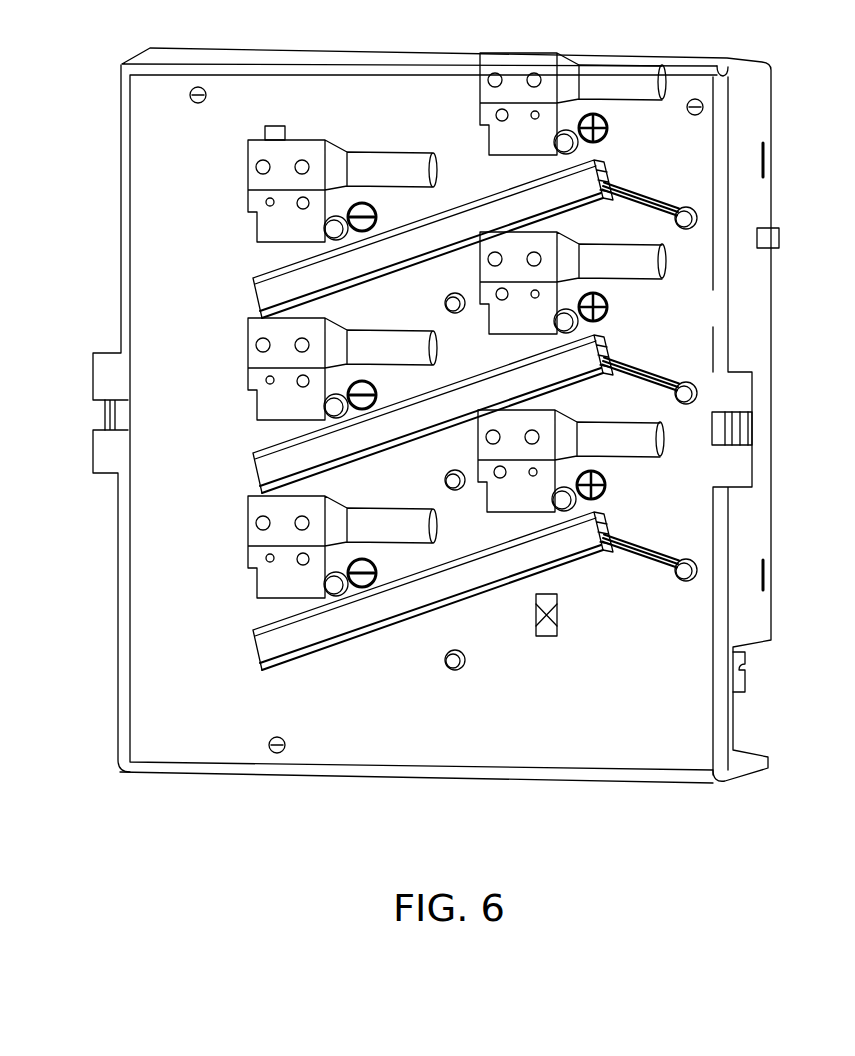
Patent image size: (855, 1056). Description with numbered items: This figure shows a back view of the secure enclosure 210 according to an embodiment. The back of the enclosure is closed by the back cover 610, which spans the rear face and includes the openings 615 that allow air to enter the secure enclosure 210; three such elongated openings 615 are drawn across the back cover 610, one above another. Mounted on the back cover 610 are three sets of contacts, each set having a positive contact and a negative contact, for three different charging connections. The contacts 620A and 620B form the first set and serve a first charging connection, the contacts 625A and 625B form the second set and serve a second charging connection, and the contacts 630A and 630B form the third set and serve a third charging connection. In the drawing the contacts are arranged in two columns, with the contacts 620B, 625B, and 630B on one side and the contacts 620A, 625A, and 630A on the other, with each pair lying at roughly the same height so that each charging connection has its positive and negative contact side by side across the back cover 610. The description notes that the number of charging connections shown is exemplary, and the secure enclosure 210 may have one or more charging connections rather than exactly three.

The secure enclosure 210 is at (130, 155).
The back cover 610 is at (610, 765).
The openings 615 is at (262, 290).
The contact 620A is at (562, 72).
The contact 620B is at (323, 140).
The contact 625A is at (558, 262).
The contact 625B is at (288, 373).
The contact 630A is at (540, 452).
The contact 630B is at (280, 540).